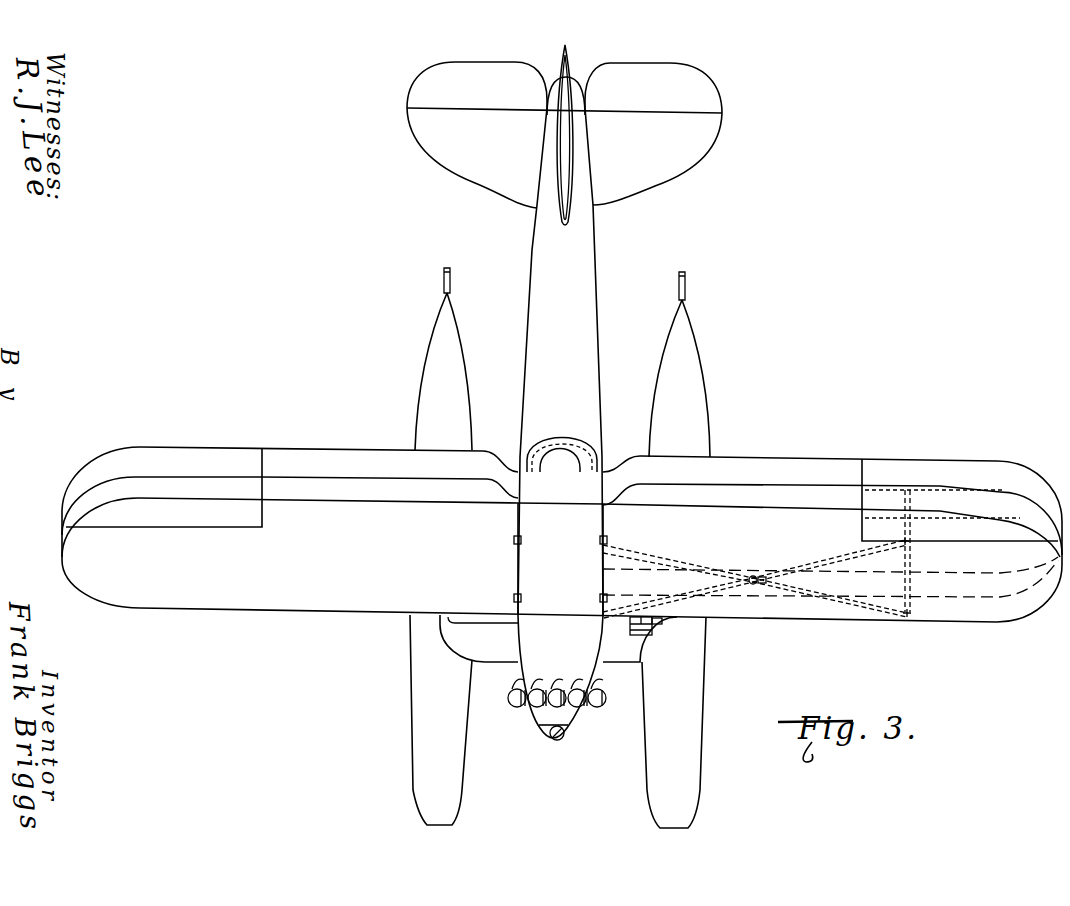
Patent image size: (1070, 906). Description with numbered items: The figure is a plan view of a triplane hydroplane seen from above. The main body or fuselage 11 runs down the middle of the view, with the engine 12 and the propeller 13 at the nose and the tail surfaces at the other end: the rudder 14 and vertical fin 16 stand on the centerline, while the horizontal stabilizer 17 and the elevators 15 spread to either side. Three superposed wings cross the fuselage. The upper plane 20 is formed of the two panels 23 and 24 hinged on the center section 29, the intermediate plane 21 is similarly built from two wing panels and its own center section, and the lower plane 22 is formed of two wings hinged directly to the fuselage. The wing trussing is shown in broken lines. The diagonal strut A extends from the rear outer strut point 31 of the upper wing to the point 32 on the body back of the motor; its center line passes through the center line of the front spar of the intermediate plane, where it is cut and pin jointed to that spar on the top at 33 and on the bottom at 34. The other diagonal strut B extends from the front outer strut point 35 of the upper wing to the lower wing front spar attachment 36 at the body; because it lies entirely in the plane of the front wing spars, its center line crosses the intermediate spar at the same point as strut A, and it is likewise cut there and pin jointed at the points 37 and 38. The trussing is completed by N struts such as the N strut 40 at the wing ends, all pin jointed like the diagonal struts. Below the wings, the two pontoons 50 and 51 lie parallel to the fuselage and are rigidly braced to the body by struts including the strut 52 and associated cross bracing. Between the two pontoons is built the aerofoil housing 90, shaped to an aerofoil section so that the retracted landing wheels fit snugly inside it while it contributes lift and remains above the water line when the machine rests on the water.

The main body or fuselage 11 is at (597, 347).
The engine 12 is at (606, 698).
The propeller 13 is at (553, 738).
The rudder 14 is at (560, 62).
The elevators 15 is at (714, 96).
The vertical fin 16 is at (572, 148).
The horizontal stabilizer 17 is at (708, 151).
The upper plane 20 is at (758, 509).
The intermediate plane 21 is at (764, 486).
The lower plane 22 is at (771, 456).
The panel 23 is at (562, 502).
The panel 24 is at (757, 557).
The center section 29 is at (560, 559).
The rear outer strut point 31 is at (908, 544).
The point on the body 32 is at (605, 618).
The pin joint (top) 33 is at (759, 578).
The pin joint (bottom) 34 is at (752, 585).
The front outer strut point 35 is at (908, 618).
The lower wing front spar attachment 36 is at (606, 550).
The pin joint 37 is at (758, 585).
The pin joint 38 is at (749, 577).
The N strut 40 is at (912, 573).
The pontoon 50 is at (441, 546).
The pontoon 51 is at (676, 550).
The strut 52 is at (652, 626).
The aerofoil housing 90 is at (497, 667).
The diagonal strut A is at (722, 592).
The diagonal strut B is at (850, 598).